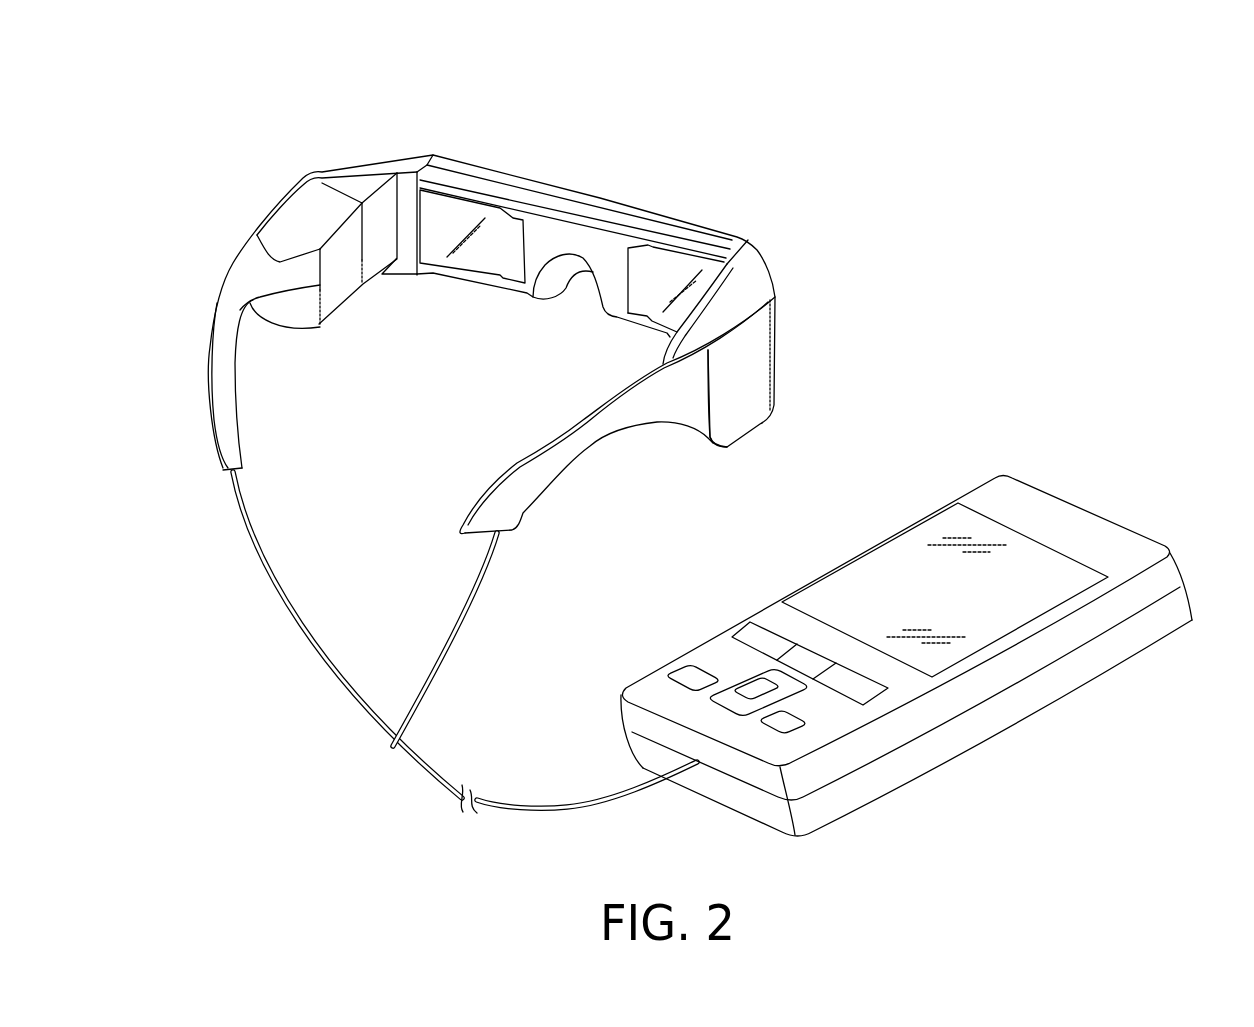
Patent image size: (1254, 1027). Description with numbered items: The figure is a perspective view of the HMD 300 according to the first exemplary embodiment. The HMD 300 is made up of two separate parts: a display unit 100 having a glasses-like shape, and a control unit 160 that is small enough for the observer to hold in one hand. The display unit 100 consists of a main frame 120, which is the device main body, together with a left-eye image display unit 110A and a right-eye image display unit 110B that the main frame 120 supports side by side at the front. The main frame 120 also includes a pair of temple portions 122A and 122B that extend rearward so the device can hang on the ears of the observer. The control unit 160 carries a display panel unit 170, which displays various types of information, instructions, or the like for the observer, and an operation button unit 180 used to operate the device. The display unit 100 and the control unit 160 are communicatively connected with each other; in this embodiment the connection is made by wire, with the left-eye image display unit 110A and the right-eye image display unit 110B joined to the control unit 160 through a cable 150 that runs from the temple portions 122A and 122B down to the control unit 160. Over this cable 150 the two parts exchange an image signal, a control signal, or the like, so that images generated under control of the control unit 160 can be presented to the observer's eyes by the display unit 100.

The display unit 100 is at (782, 117).
The left-eye image display unit 110A is at (480, 151).
The right-eye image display unit 110B is at (704, 206).
The main frame 120 is at (359, 164).
The temple portion 122A is at (217, 303).
The temple portion 122B is at (590, 448).
The cable 150 is at (532, 805).
The control unit 160 is at (1112, 493).
The display panel unit 170 is at (910, 565).
The operation button unit 180 is at (748, 581).
The HMD 300 is at (895, 182).